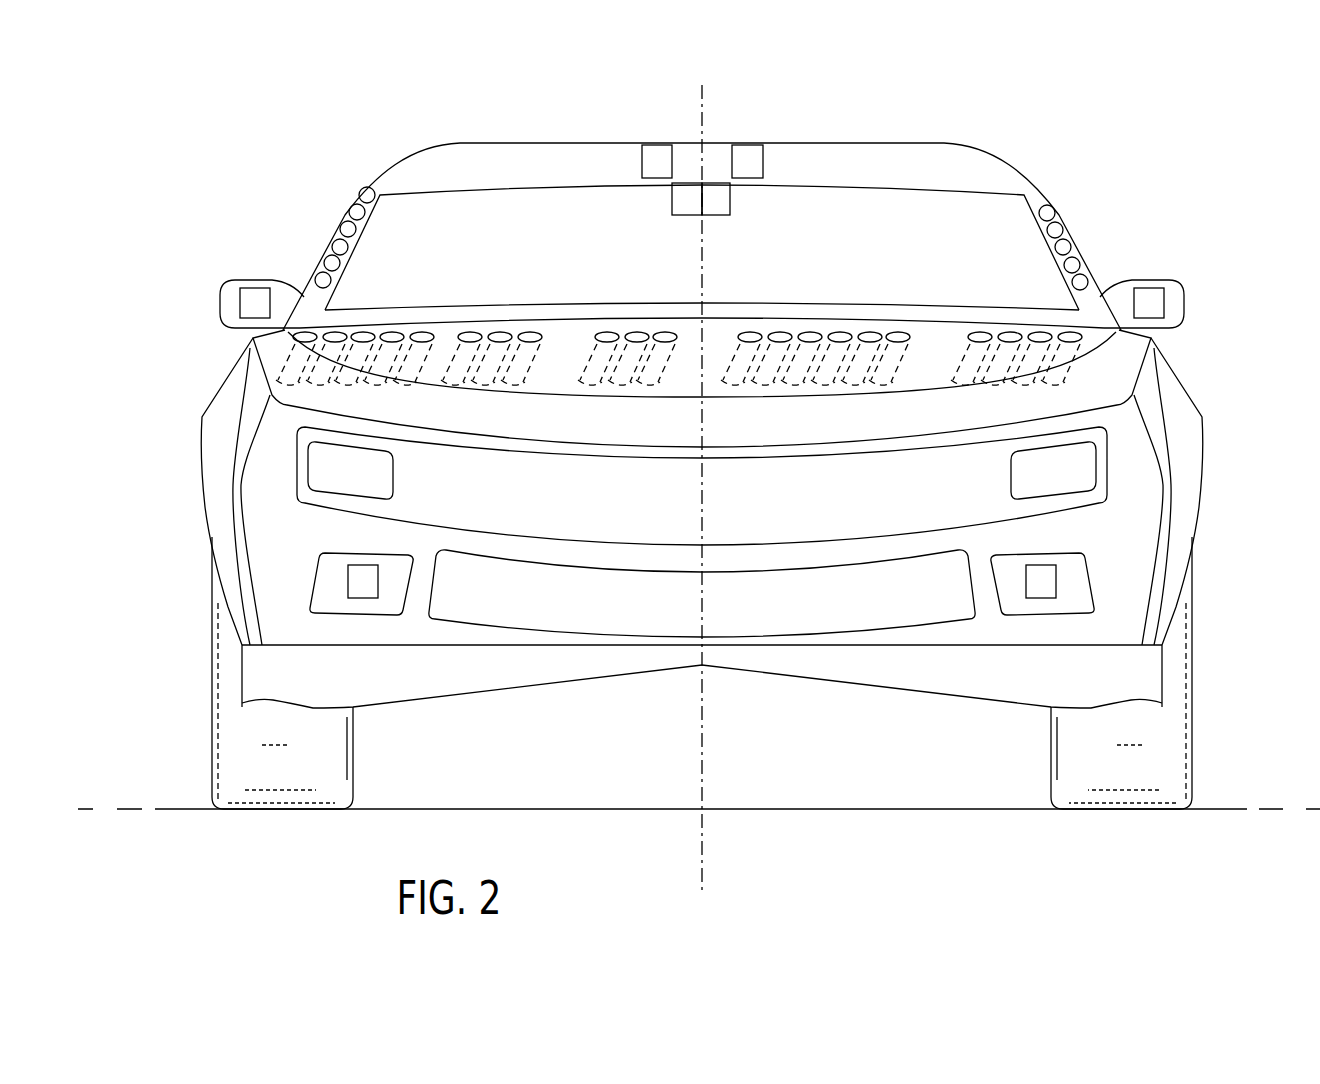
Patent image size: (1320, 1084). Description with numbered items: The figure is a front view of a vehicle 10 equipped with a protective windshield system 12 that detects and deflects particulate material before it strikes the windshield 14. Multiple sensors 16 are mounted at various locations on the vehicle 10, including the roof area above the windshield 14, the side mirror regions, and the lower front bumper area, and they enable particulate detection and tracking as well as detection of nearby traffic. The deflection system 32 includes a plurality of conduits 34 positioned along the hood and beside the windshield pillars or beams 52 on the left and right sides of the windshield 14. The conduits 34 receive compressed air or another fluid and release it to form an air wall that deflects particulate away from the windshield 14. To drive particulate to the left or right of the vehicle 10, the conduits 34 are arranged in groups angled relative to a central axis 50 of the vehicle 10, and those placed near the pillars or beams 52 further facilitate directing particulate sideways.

The vehicle 10 is at (985, 852).
The protective windshield system 12 is at (1147, 202).
The windshield 14 is at (523, 220).
The sensors 16 is at (640, 161).
The deflection system 32 is at (1212, 358).
The conduits 34 is at (338, 243).
The central axis 50 is at (704, 851).
The windshield pillars or beams 52 is at (305, 282).